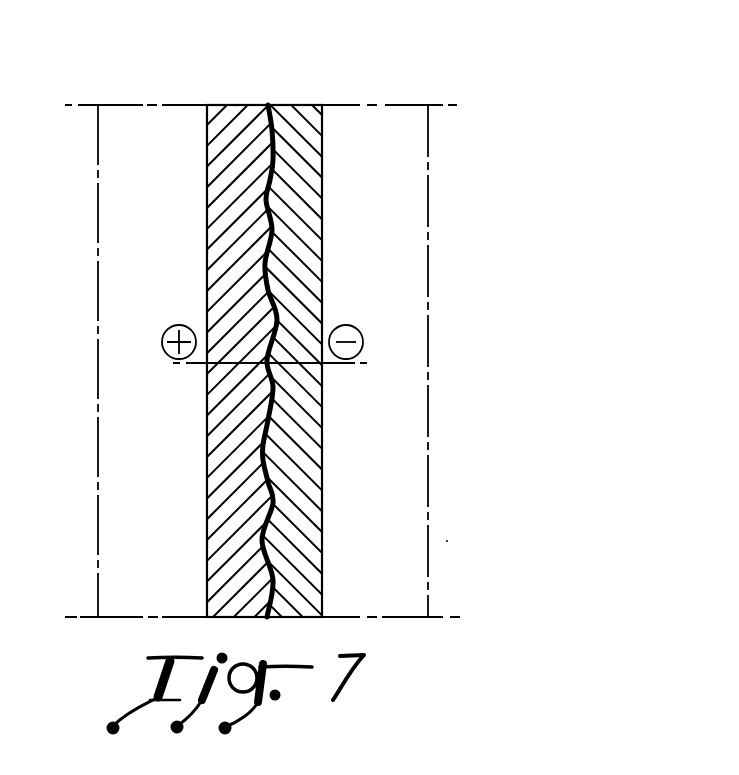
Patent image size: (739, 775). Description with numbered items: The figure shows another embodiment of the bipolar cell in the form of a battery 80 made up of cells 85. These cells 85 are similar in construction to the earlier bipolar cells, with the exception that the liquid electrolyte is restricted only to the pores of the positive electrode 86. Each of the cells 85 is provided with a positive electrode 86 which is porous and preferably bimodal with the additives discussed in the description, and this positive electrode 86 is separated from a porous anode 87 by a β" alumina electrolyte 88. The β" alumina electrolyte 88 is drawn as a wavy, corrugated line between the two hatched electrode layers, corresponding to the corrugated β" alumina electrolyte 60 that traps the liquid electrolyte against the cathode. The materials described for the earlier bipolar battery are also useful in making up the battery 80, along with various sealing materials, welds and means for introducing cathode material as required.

The battery 80 is at (83, 29).
The cells 85 is at (302, 105).
The positive electrode 86 is at (232, 240).
The porous anode 87 is at (303, 250).
The β" alumina electrolyte 88 is at (270, 105).
The corrugated β" alumina electrolyte 60 is at (272, 380).